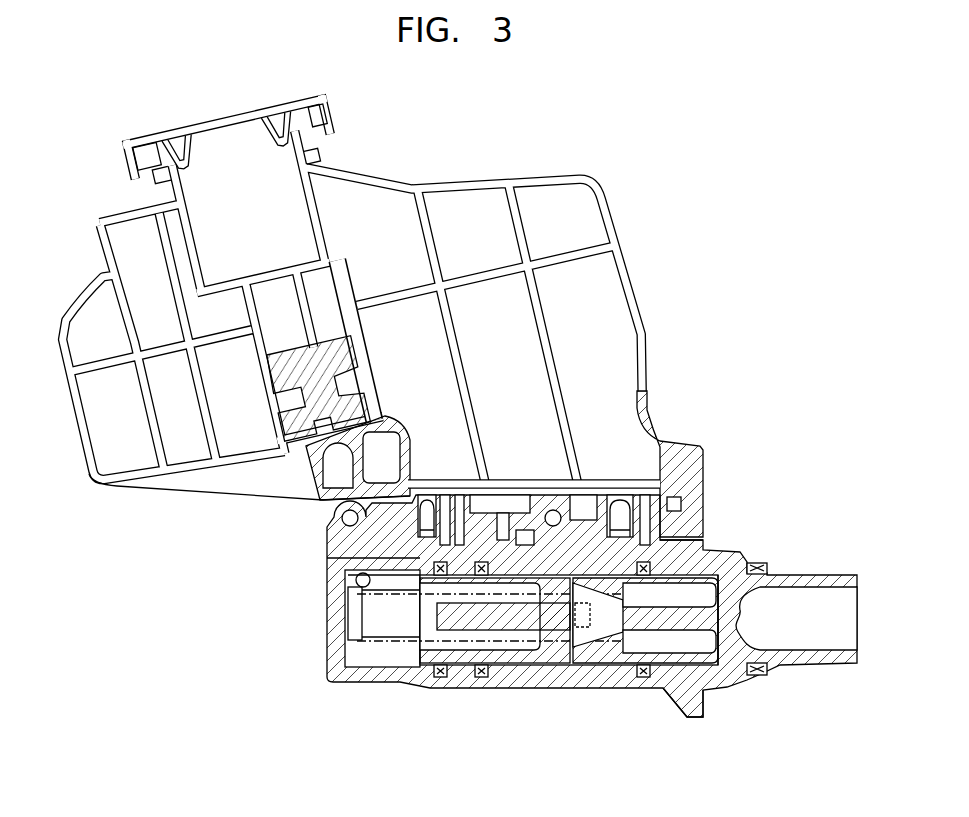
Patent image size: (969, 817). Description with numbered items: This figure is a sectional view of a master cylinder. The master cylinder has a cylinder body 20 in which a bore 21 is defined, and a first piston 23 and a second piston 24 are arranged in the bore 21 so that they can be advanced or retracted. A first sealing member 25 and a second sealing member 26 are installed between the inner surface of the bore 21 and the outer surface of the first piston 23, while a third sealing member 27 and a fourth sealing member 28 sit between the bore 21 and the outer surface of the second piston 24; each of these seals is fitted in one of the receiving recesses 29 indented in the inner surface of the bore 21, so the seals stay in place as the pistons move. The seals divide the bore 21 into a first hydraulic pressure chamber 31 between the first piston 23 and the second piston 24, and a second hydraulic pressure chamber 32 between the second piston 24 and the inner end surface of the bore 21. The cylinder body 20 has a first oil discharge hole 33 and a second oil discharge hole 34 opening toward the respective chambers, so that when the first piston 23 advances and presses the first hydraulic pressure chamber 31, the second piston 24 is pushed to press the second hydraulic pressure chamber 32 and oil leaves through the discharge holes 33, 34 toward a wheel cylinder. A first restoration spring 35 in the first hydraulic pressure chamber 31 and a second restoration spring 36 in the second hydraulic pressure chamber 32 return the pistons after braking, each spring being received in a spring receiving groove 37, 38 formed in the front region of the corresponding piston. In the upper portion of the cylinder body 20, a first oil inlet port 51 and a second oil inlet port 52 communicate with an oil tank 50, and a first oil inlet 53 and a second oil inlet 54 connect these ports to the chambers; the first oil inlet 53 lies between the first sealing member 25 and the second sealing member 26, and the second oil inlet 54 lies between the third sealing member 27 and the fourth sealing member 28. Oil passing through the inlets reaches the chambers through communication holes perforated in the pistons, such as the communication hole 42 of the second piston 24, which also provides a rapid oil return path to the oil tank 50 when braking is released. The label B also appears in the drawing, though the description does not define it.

The cylinder body 20 is at (730, 556).
The bore 21 is at (390, 577).
The first piston 23 is at (743, 657).
The second piston 24 is at (533, 660).
The first sealing member 25 is at (760, 563).
The second sealing member 26 is at (651, 510).
The third sealing member 27 is at (503, 528).
The fourth sealing member 28 is at (432, 530).
The receiving recesses 29 is at (405, 522).
The first hydraulic pressure chamber 31 is at (588, 660).
The second hydraulic pressure chamber 32 is at (370, 660).
The first oil discharge hole 33 is at (525, 535).
The second oil discharge hole 34 is at (356, 584).
The first restoration spring 35 is at (627, 657).
The second restoration spring 36 is at (403, 650).
The spring receiving groove 37 is at (680, 703).
The spring receiving groove 38 is at (490, 655).
The communication hole 42 is at (358, 597).
The oil tank 50 is at (647, 299).
The first oil inlet port 51 is at (645, 563).
The second oil inlet port 52 is at (482, 478).
The first oil inlet 53 is at (667, 553).
The second oil inlet 54 is at (450, 528).
The body boundary B is at (423, 557).